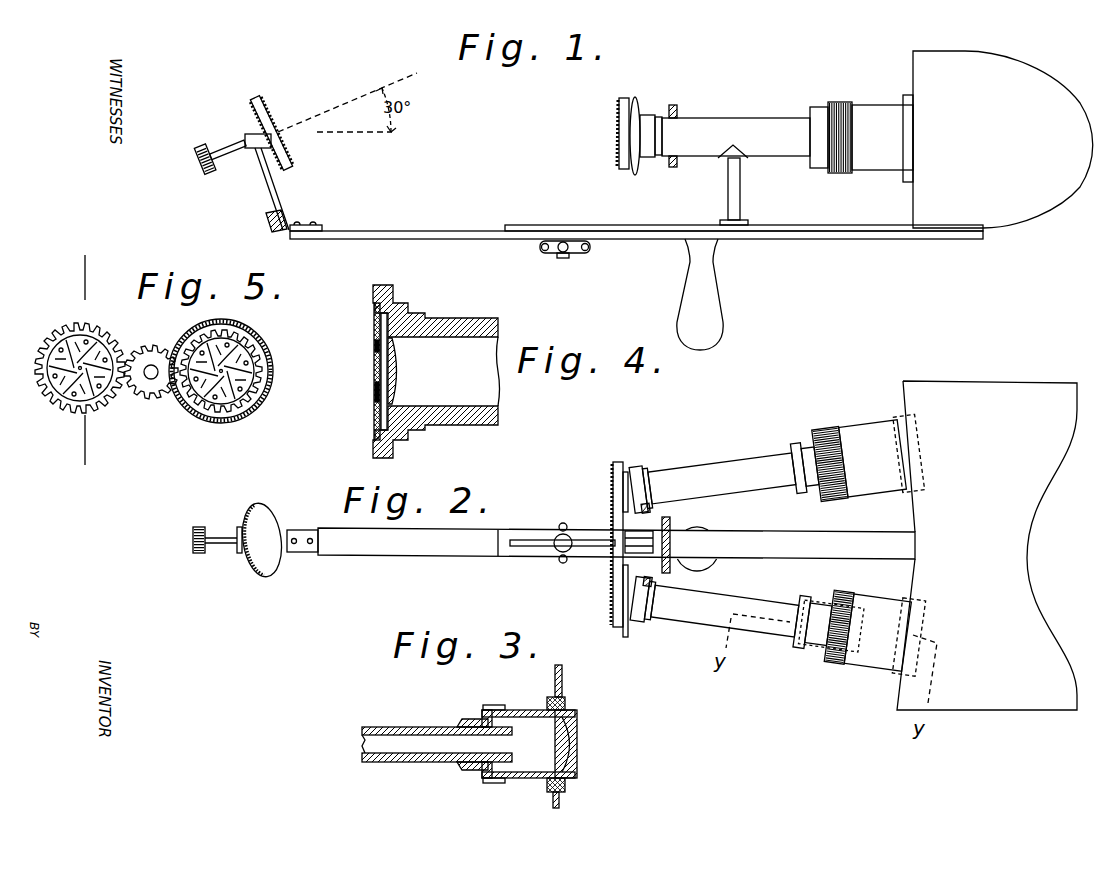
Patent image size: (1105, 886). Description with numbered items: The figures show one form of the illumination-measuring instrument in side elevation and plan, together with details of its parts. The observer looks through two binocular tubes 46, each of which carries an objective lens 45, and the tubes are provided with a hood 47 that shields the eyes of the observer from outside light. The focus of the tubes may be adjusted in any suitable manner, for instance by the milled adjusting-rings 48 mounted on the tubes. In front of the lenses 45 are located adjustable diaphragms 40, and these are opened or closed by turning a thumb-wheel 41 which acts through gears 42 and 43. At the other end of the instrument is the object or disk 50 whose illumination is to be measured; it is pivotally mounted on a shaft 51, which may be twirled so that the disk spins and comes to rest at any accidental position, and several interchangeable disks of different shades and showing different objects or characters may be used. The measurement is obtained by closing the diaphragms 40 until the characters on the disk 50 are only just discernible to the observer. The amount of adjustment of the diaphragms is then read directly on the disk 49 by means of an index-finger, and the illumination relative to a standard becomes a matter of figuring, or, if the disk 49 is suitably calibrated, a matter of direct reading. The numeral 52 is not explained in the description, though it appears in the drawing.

In FIG. 4, the diaphragms 40 is at (374, 364).
In FIG. 5, the diaphragms 40 is at (229, 400).
In FIG. 1, the thumb-wheel 41 is at (678, 160).
In FIG. 2, the thumb-wheel 41 is at (690, 540).
In FIG. 1, the gears 42 is at (617, 153).
In FIG. 2, the gears 42 is at (610, 490).
In FIG. 4, the gears 42 is at (378, 290).
In FIG. 5, the gears 42 is at (101, 413).
In FIG. 2, the gears 43 is at (618, 532).
In FIG. 5, the gears 43 is at (150, 345).
In FIG. 4, the lenses 45 is at (404, 373).
In FIG. 1, the binocular tubes 46 is at (725, 136).
In FIG. 2, the binocular tubes 46 is at (733, 465).
In FIG. 3, the binocular tubes 46 is at (437, 733).
In FIG. 4, the binocular tubes 46 is at (499, 393).
In FIG. 1, the hood 47 is at (972, 139).
In FIG. 2, the hood 47 is at (957, 545).
In FIG. 1, the milled adjusting-rings 48 is at (841, 121).
In FIG. 2, the milled adjusting-rings 48 is at (838, 430).
In FIG. 3, the milled adjusting-rings 48 is at (488, 708).
In FIG. 1, the disk 49 is at (633, 168).
In FIG. 2, the disk 49 is at (626, 636).
In FIG. 5, the disk 49 is at (262, 401).
In FIG. 1, the disk 50 is at (286, 137).
In FIG. 2, the disk 50 is at (277, 568).
In FIG. 1, the shaft 51 is at (240, 160).
In FIG. 2, the shaft 51 is at (230, 542).
In FIG. 1, the base bar 52 is at (636, 228).
In FIG. 2, the base bar 52 is at (601, 543).